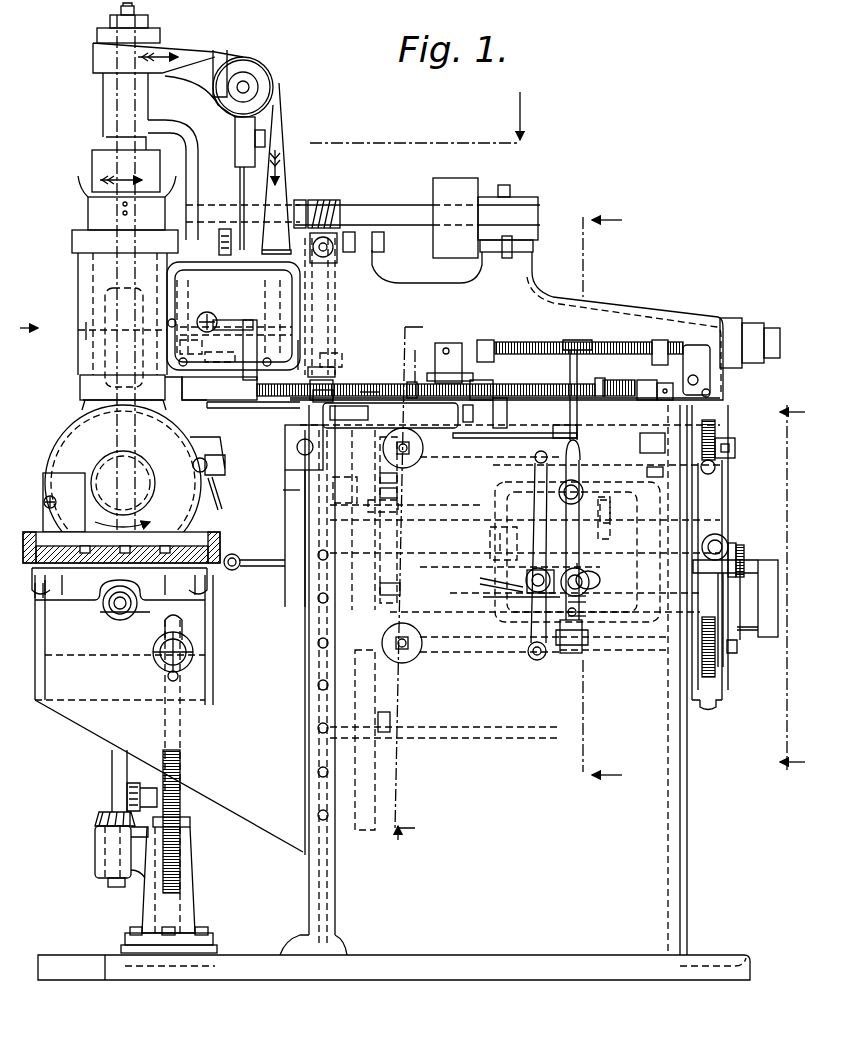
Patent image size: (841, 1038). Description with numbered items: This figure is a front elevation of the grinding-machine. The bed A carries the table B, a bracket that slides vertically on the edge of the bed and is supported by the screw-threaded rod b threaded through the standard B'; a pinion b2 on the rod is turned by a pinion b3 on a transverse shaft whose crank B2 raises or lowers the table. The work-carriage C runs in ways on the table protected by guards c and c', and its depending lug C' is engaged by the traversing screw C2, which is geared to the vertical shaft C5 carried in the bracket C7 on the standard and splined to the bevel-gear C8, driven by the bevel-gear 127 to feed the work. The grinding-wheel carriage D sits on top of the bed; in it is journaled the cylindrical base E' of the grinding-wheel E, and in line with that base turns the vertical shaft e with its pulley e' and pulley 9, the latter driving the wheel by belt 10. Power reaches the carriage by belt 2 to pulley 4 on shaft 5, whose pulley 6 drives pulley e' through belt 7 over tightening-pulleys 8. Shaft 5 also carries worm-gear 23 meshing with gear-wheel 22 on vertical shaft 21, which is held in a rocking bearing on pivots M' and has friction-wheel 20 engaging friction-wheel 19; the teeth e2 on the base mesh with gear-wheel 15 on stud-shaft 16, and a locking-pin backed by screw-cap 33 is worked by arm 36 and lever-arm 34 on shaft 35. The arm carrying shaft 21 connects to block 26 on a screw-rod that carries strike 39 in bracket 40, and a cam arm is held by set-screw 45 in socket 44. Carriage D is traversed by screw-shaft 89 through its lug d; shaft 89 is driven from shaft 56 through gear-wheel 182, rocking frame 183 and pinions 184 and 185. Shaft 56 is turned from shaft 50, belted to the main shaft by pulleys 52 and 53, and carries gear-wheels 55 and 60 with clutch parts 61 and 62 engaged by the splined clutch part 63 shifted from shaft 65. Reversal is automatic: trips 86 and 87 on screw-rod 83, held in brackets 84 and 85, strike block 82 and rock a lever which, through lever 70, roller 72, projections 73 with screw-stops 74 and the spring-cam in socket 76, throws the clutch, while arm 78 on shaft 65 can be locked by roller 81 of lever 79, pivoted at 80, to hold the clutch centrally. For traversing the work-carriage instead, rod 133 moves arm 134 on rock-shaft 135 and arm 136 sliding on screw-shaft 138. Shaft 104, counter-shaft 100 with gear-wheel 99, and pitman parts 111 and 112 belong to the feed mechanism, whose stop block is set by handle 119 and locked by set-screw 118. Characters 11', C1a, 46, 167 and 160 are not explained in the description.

The spindle knob e is at (148, 11).
The spindle head block e' is at (145, 29).
The upper spindle housing 9 is at (100, 156).
The lower spindle housing 10 is at (93, 172).
The spindle column housing 11' is at (102, 320).
The section line / shaft bracket 4 is at (478, 182).
The bearing block 2 is at (455, 218).
The spindle bearing e2 is at (93, 330).
The motor bracket E' is at (123, 387).
The motor E is at (129, 480).
The adjusting knob 33 is at (207, 311).
The slide bar 36 is at (226, 318).
The gear 15 is at (191, 344).
The gear 16 is at (212, 355).
The bracket 35 is at (219, 388).
The rail 34 is at (255, 410).
The roller bracket 134 is at (282, 430).
The guide 135 is at (282, 486).
The work table C1a is at (190, 545).
The rod 136 is at (255, 558).
The rod eye 138 is at (236, 570).
The feed screw 83 is at (282, 503).
The table support bearing C is at (109, 599).
The table hanger c' is at (52, 591).
The table carriage C' is at (81, 632).
The carriage frame C2 is at (42, 650).
The carriage side c is at (216, 639).
The frame B is at (169, 776).
The bearing cap b2 is at (185, 638).
The bearing b3 is at (195, 652).
The shaft B2 is at (167, 675).
The shaft C5 is at (110, 752).
The bevel pinion 127 is at (170, 758).
The bevel gear C8 is at (100, 814).
The feed screw b is at (183, 763).
The motor C7 is at (95, 849).
The pedestal B' is at (179, 885).
The pulley 8 is at (268, 75).
The belt / section line 7 is at (281, 128).
The section line 6 is at (290, 185).
The belt pulley 22 is at (305, 205).
The worm 23 is at (314, 202).
The shaft / section line 5 is at (398, 210).
The bearing M' is at (331, 269).
The vertical shaft 21 is at (318, 318).
The gear 20 is at (335, 358).
The bearing 19 is at (300, 355).
The bracket 26 is at (336, 375).
The pin 45 is at (366, 391).
The axis line 39 is at (413, 367).
The slide 40 is at (475, 378).
The machine arm D is at (506, 338).
The bracket 84 is at (452, 340).
The nut 87 is at (488, 338).
The lever 82 is at (582, 343).
The collar 86 is at (658, 340).
The bracket 85 is at (690, 347).
The hand wheel hub 52 is at (750, 318).
The spring 46 is at (606, 381).
The bracket 44 is at (646, 383).
The cover plate 133 is at (390, 415).
The pulley 89 is at (424, 448).
The pulley 104 is at (482, 650).
The gear box d is at (527, 438).
The bracket 70 is at (365, 511).
The clutch part 184 is at (397, 480).
The clutch part 183 is at (397, 495).
The clutch part 182 is at (380, 528).
The shaft 56 is at (432, 548).
The clutch part 185 is at (400, 589).
The lever 60 is at (535, 506).
The lever arm 62 is at (535, 526).
The gear 63 is at (528, 548).
The bearing block 81 is at (525, 583).
The link 78 is at (527, 599).
The rod 79 is at (530, 616).
The pivot 80 is at (540, 661).
The bracket 76 is at (570, 658).
The gear 61 is at (596, 518).
The gear 55 is at (605, 524).
The pin 65 is at (590, 578).
The link 73 is at (587, 596).
The link 74 is at (586, 602).
The link 72 is at (586, 615).
The pin 167 is at (582, 440).
The bracket 99 is at (648, 468).
The plate 112 is at (727, 478).
The gear 100 is at (736, 446).
The pivot 119 is at (708, 486).
The wheel 118 is at (724, 538).
The ratchet 160 is at (742, 548).
The handle 53 is at (757, 598).
The rack 111 is at (723, 630).
The frame column 50 is at (780, 618).
The base A is at (394, 893).